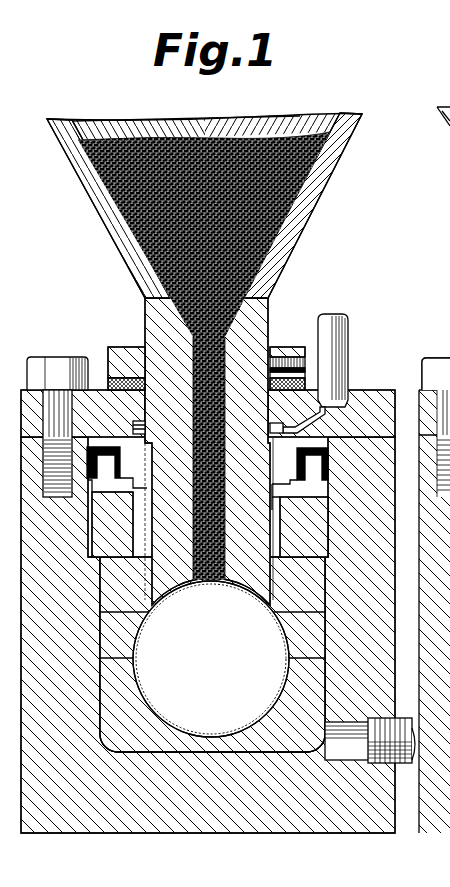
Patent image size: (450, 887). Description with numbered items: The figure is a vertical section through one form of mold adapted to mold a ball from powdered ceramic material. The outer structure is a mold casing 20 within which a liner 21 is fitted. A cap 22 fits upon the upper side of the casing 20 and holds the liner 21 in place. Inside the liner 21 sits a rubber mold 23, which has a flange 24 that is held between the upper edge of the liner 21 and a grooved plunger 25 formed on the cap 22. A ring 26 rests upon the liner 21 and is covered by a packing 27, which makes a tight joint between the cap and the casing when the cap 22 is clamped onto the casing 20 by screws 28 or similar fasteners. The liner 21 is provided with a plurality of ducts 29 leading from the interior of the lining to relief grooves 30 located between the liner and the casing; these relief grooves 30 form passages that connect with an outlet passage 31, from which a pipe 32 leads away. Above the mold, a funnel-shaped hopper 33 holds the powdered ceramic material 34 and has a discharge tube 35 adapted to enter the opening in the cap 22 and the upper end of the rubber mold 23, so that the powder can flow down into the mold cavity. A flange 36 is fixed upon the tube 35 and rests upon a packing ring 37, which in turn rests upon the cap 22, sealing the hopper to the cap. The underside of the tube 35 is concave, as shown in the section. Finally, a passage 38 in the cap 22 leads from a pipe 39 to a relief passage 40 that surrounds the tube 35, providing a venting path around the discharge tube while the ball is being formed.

The mold casing 20 is at (97, 830).
The liner 21 is at (285, 718).
The cap 22 is at (366, 391).
The rubber mold 23 is at (277, 620).
The flange 24 is at (280, 505).
The grooved plunger 25 is at (267, 508).
The ring 26 is at (305, 487).
The packing 27 is at (330, 463).
The screws 28 is at (53, 368).
The ducts 29 is at (212, 735).
The relief grooves 30 is at (310, 753).
The outlet passage 31 is at (343, 761).
The pipe 32 is at (402, 717).
The funnel-shaped hopper 33 is at (293, 236).
The powdered ceramic material 34 is at (250, 259).
The discharge tube 35 is at (264, 313).
The flange 36 is at (290, 346).
The packing ring 37 is at (101, 380).
The passage 38 is at (339, 405).
The pipe 39 is at (348, 327).
The relief passage 40 is at (133, 425).